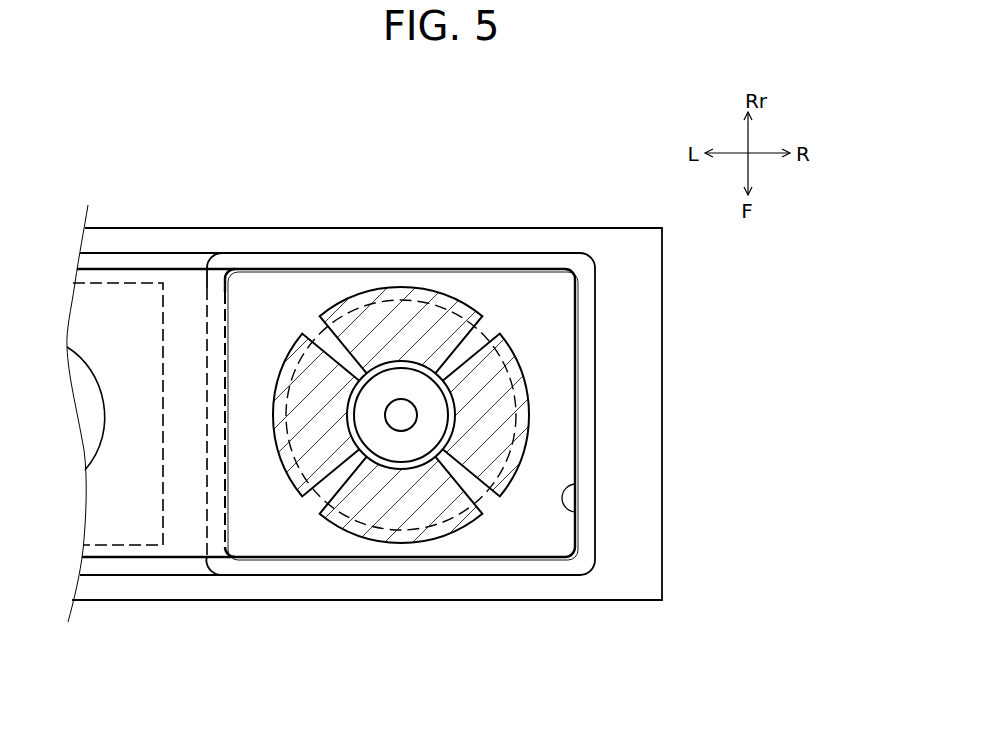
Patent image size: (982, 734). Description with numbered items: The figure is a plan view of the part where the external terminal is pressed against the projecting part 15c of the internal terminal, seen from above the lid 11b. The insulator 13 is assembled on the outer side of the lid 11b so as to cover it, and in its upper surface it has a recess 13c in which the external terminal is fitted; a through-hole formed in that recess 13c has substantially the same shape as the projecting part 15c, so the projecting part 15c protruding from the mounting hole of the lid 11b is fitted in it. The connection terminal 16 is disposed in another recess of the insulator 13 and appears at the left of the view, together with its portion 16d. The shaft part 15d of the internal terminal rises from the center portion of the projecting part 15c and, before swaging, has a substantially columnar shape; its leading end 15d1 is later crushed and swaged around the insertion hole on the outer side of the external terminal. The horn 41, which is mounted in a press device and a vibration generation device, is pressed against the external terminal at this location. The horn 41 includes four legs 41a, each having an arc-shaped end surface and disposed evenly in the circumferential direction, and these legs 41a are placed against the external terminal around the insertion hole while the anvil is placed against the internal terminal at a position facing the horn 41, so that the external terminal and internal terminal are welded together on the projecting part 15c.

The lid 11b is at (662, 350).
The insulator 13 is at (545, 253).
The recess 13c is at (579, 512).
The projecting part 15c is at (393, 300).
The shaft part 15d is at (448, 396).
The leading end 15d1 is at (420, 418).
The connection terminal 16 is at (103, 454).
The protrusion of sensor unit 16d is at (97, 375).
The horn 41 is at (400, 413).
The legs 41a is at (285, 363).